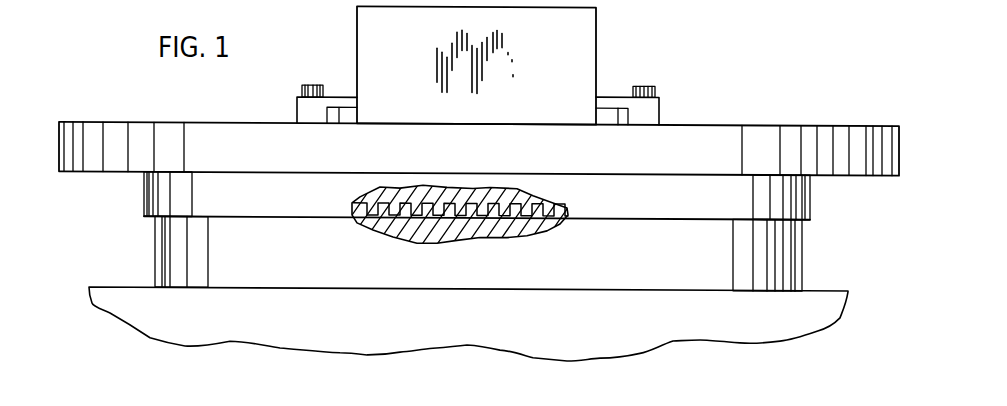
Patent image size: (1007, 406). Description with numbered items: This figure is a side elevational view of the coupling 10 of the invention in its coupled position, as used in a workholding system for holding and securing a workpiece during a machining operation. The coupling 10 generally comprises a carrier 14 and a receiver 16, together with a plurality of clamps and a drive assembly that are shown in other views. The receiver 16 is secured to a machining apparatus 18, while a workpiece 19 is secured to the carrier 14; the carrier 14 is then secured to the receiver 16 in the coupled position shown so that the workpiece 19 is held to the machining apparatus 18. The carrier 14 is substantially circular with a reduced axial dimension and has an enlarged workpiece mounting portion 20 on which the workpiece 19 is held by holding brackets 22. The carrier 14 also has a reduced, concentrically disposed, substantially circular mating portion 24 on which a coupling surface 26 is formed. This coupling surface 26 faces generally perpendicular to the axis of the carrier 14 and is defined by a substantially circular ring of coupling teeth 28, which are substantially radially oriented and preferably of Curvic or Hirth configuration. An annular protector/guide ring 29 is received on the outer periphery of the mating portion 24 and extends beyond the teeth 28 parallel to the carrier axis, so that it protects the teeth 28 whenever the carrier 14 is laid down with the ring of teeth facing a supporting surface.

The coupling 10 is at (527, 148).
The carrier 14 is at (473, 104).
The receiver 16 is at (168, 249).
The machining apparatus 18 is at (792, 312).
The workpiece 19 is at (587, 66).
The workpiece mounting portion 20 is at (808, 137).
The holding brackets 22 is at (647, 113).
The mating portion 24 is at (553, 222).
The coupling surface 26 is at (487, 203).
The coupling teeth 28 is at (433, 245).
The protector/guide ring 29 is at (812, 202).